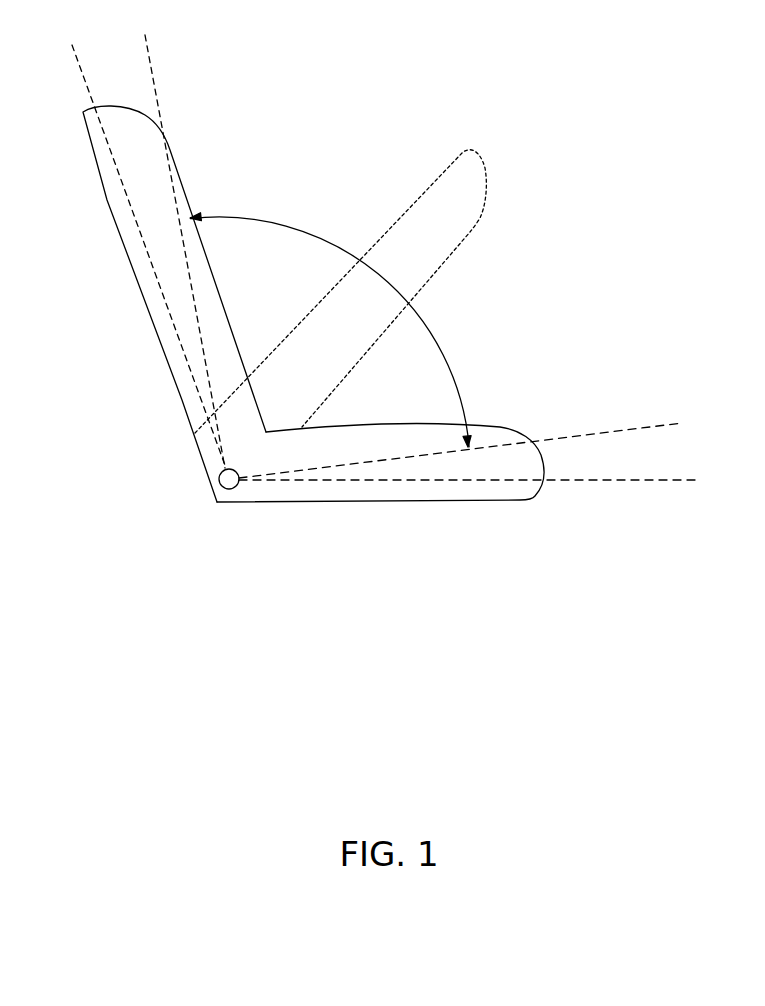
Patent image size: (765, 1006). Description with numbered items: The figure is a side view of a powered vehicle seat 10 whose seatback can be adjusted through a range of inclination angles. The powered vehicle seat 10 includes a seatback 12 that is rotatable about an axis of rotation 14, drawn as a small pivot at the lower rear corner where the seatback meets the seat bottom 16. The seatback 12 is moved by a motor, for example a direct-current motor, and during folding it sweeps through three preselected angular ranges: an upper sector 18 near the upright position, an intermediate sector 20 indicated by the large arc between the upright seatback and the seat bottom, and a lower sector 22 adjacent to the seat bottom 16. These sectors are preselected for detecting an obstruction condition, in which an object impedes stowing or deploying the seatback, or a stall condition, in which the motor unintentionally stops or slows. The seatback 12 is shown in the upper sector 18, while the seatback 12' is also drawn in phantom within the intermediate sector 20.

The powered vehicle seat 10 is at (380, 133).
The seatback 12 is at (145, 304).
The seatback in phantom 12' is at (389, 276).
The axis of rotation 14 is at (196, 491).
The seat bottom 16 is at (452, 503).
The upper sector 18 is at (88, 83).
The intermediate sector 20 is at (430, 317).
The lower sector 22 is at (578, 443).